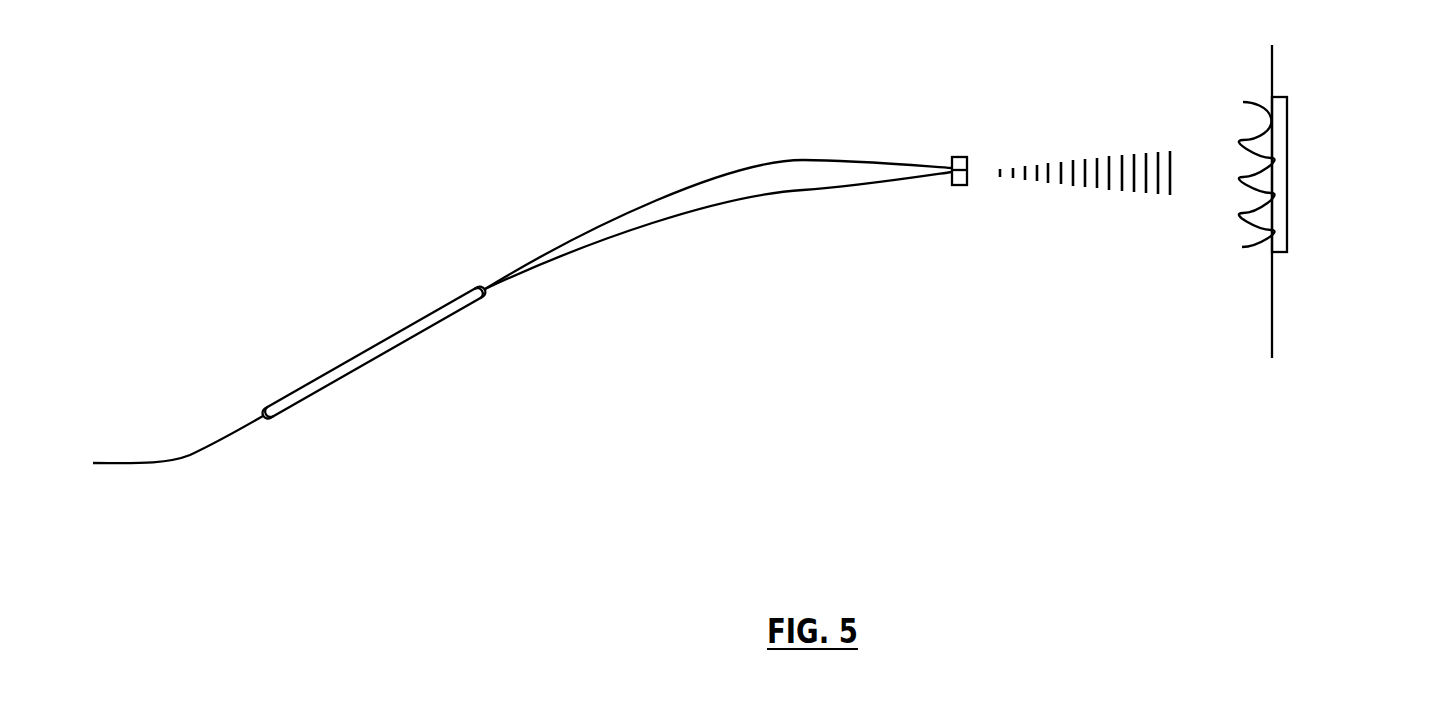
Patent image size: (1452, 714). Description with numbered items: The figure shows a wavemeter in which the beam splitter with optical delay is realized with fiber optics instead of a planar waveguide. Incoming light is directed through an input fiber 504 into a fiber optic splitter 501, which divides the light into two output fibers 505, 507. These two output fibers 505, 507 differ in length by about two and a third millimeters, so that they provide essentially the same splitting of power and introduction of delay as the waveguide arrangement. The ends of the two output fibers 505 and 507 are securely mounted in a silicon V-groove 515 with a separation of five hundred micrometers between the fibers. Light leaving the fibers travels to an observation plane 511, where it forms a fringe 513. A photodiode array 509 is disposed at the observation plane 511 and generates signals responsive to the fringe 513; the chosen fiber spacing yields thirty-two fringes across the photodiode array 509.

The fiber optic splitter 501 is at (415, 340).
The input fiber 504 is at (207, 453).
The output fiber 505 is at (667, 223).
The output fiber 507 is at (657, 186).
The photodiode array 509 is at (1288, 137).
The observation plane 511 is at (1270, 293).
The fringe 513 is at (1243, 138).
The silicon V-groove 515 is at (957, 190).